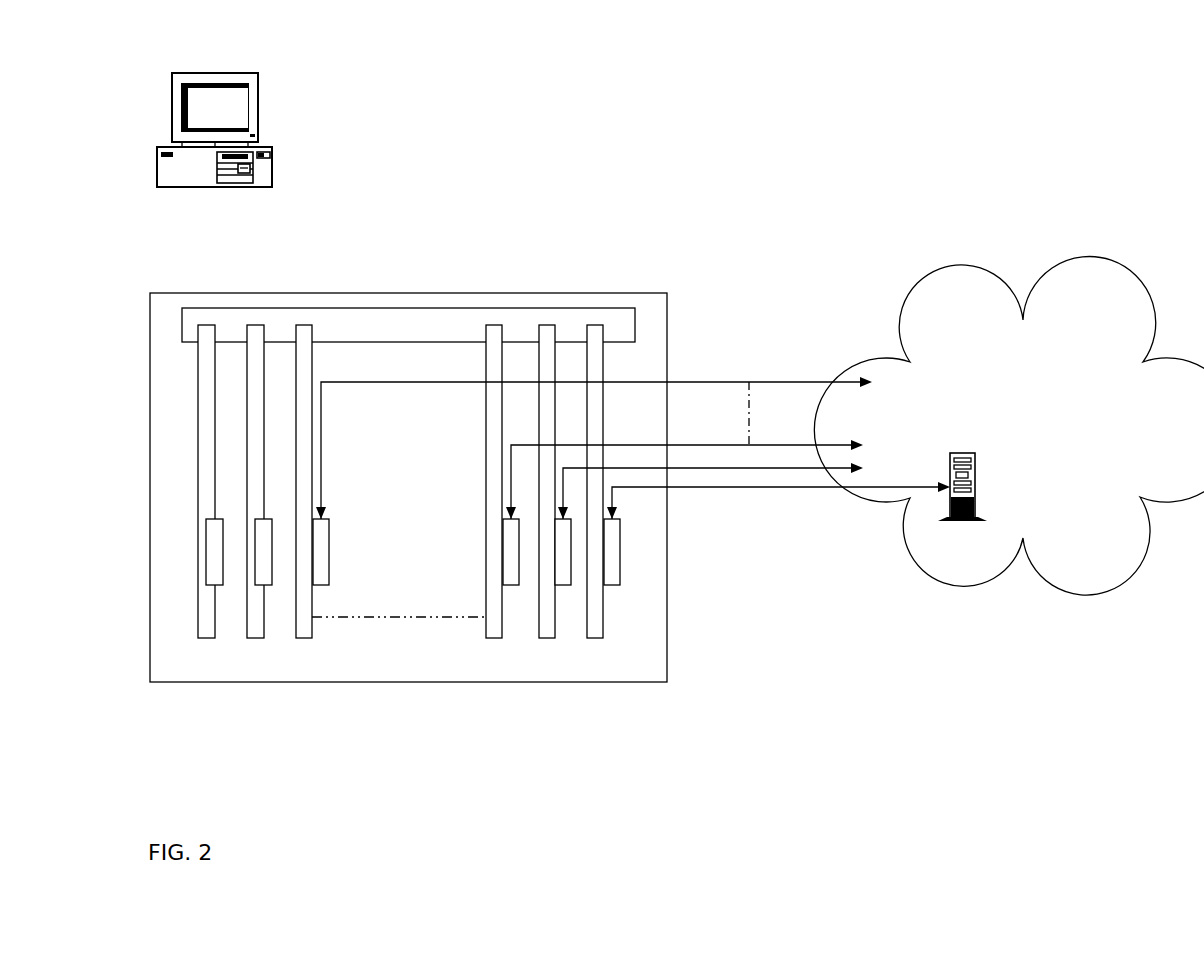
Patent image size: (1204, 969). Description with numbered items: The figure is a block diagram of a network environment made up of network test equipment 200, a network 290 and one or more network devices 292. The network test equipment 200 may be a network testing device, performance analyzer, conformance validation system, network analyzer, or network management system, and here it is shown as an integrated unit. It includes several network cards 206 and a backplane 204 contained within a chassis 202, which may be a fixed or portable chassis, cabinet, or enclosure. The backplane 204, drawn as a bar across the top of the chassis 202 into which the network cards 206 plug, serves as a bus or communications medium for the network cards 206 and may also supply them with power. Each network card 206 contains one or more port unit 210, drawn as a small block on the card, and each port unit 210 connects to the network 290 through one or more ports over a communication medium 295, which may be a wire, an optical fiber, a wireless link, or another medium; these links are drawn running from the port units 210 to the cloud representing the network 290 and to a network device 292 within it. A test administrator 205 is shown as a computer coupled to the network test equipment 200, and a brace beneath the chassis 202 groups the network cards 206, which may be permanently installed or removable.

The network test equipment 200 is at (608, 88).
The chassis 202 is at (522, 292).
The backplane 204 is at (587, 308).
The test administrator 205 is at (408, 279).
The network cards 206 is at (615, 638).
The port unit 210 is at (608, 585).
The network 290 is at (1009, 425).
The network devices 292 is at (977, 487).
The communication medium 295 is at (732, 487).